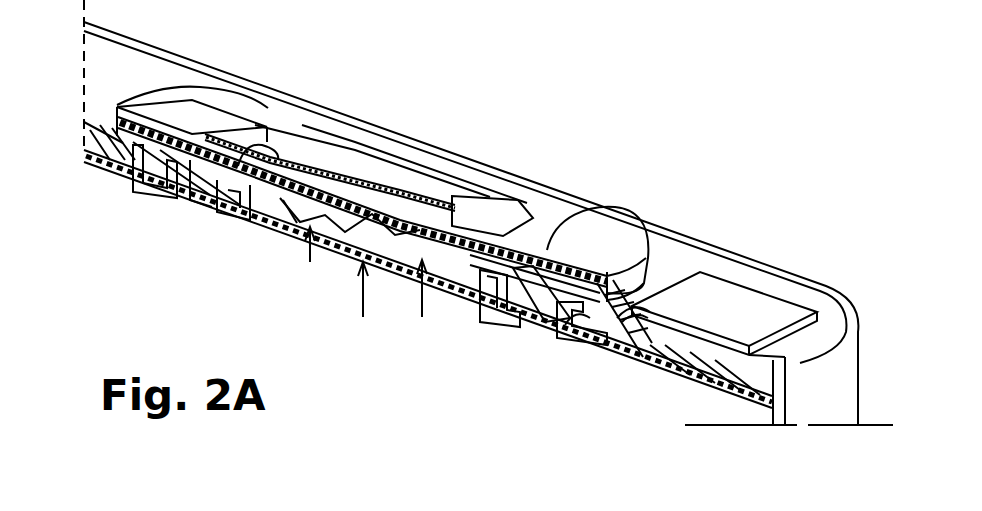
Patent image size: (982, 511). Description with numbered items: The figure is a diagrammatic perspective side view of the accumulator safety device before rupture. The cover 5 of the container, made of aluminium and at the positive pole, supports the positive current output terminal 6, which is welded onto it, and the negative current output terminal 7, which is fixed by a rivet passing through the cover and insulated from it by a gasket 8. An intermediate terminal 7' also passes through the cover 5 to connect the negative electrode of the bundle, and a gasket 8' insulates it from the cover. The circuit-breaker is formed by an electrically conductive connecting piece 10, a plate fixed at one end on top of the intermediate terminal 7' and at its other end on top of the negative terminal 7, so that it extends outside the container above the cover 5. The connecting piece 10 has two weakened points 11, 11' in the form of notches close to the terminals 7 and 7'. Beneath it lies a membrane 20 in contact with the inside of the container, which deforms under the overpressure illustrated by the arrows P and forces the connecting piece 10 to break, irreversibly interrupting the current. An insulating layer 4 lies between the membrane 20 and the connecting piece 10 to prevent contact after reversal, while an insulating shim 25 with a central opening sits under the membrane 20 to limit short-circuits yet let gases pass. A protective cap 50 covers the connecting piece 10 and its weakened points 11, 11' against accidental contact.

The insulating layer 4 is at (214, 215).
The cover 5 is at (665, 257).
The positive current output terminal 6 is at (760, 302).
The negative current output terminal 7 is at (197, 108).
The intermediate terminal 7' is at (592, 220).
The gasket 8 is at (136, 182).
The gasket 8' is at (620, 335).
The connecting piece 10 is at (350, 147).
The weakened point 11 is at (394, 174).
The weakened point 11' is at (441, 181).
The membrane 20 is at (270, 248).
The insulating shim 25 is at (405, 292).
The protective cap 50 is at (541, 172).
The overpressure arrows P is at (366, 276).